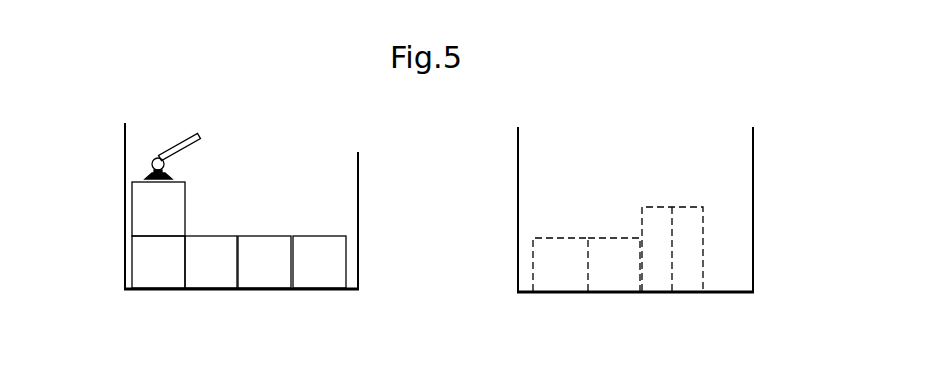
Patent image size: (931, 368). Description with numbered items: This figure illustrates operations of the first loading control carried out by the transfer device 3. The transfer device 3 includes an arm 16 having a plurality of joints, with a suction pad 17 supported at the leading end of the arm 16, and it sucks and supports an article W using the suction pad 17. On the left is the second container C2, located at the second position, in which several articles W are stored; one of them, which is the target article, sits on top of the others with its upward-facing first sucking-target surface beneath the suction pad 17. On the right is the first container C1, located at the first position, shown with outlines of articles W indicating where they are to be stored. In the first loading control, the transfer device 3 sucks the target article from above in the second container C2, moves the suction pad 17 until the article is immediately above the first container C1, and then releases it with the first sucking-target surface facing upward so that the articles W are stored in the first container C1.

The transfer device 3 is at (163, 136).
The arm 16 is at (204, 143).
The suction pad 17 is at (152, 166).
The article W is at (210, 280).
The first container C1 is at (753, 233).
The second container C2 is at (125, 233).